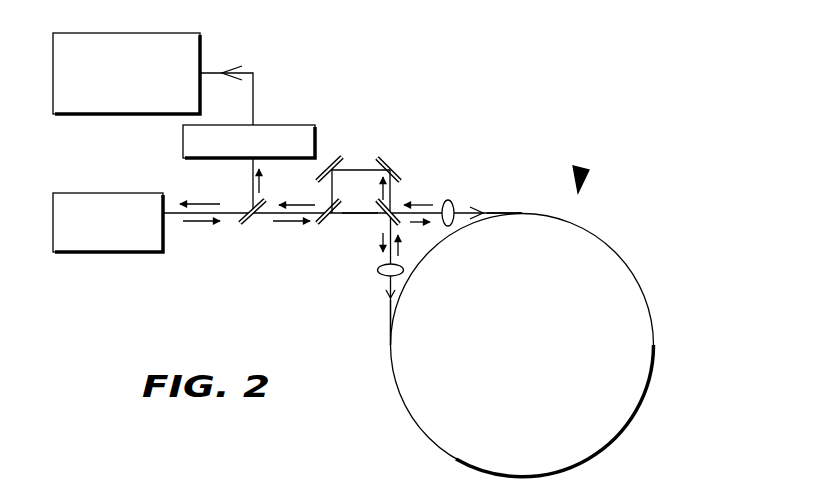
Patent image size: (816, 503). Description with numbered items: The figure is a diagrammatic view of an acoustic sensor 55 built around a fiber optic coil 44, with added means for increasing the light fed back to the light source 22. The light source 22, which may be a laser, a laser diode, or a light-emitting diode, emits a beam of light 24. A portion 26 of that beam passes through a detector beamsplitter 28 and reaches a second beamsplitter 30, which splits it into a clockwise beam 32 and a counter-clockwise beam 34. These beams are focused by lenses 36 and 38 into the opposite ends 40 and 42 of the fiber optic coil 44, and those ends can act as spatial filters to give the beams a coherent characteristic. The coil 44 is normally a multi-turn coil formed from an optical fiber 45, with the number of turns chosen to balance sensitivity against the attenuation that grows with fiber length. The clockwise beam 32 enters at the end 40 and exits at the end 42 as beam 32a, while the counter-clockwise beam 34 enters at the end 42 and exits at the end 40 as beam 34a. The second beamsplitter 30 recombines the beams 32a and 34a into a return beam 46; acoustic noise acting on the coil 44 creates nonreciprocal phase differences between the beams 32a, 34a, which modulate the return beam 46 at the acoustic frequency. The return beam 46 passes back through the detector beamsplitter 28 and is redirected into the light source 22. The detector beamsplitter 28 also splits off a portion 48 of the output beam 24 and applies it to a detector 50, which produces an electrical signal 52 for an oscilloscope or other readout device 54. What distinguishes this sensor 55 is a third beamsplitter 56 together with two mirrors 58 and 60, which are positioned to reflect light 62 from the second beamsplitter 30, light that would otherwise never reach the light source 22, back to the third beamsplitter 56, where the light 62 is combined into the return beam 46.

The light source 22 is at (137, 254).
The beam of light 24 is at (183, 223).
The portion of the beam 26 is at (277, 222).
The detector beamsplitter 28 is at (243, 227).
The second beamsplitter 30 is at (377, 221).
The clockwise beam 32 is at (415, 226).
The exiting clockwise beam 32a is at (400, 258).
The counter-clockwise beam 34 is at (377, 271).
The exiting counter-clockwise beam 34a is at (430, 198).
The lens 36 is at (445, 201).
The lens 38 is at (383, 292).
The coil end 40 is at (478, 207).
The coil end 42 is at (385, 303).
The fiber optic coil 44 is at (598, 238).
The optical fiber 45 is at (487, 213).
The return beam 46 is at (203, 203).
The portion of the beam 48 is at (260, 195).
The detector 50 is at (303, 124).
The electrical signal 52 is at (253, 92).
The readout device 54 is at (202, 46).
The sensor 55 is at (582, 168).
The third beamsplitter 56 is at (325, 225).
The mirror 58 is at (378, 158).
The mirror 60 is at (342, 157).
The redirected light 62 is at (380, 184).